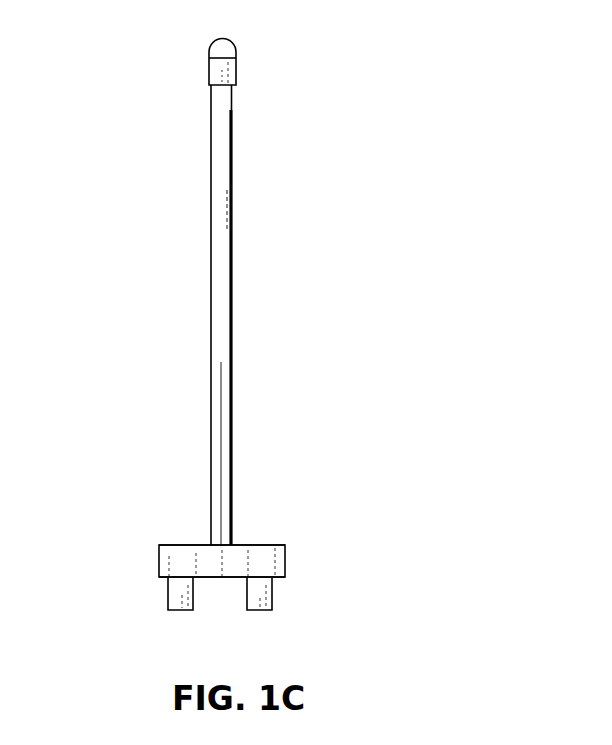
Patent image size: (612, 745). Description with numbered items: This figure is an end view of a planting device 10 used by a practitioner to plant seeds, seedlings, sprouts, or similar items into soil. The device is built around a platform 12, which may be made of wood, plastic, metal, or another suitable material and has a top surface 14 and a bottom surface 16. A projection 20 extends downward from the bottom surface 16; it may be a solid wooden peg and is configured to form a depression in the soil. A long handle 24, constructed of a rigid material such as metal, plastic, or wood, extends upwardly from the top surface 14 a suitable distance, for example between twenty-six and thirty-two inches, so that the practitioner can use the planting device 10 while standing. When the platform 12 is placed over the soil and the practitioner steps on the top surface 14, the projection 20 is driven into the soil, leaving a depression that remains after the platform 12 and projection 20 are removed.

The planting device 10 is at (116, 43).
The platform 12 is at (165, 560).
The top surface 14 is at (262, 545).
The bottom surface 16 is at (278, 578).
The projection 20 is at (257, 602).
The handle 24 is at (225, 178).